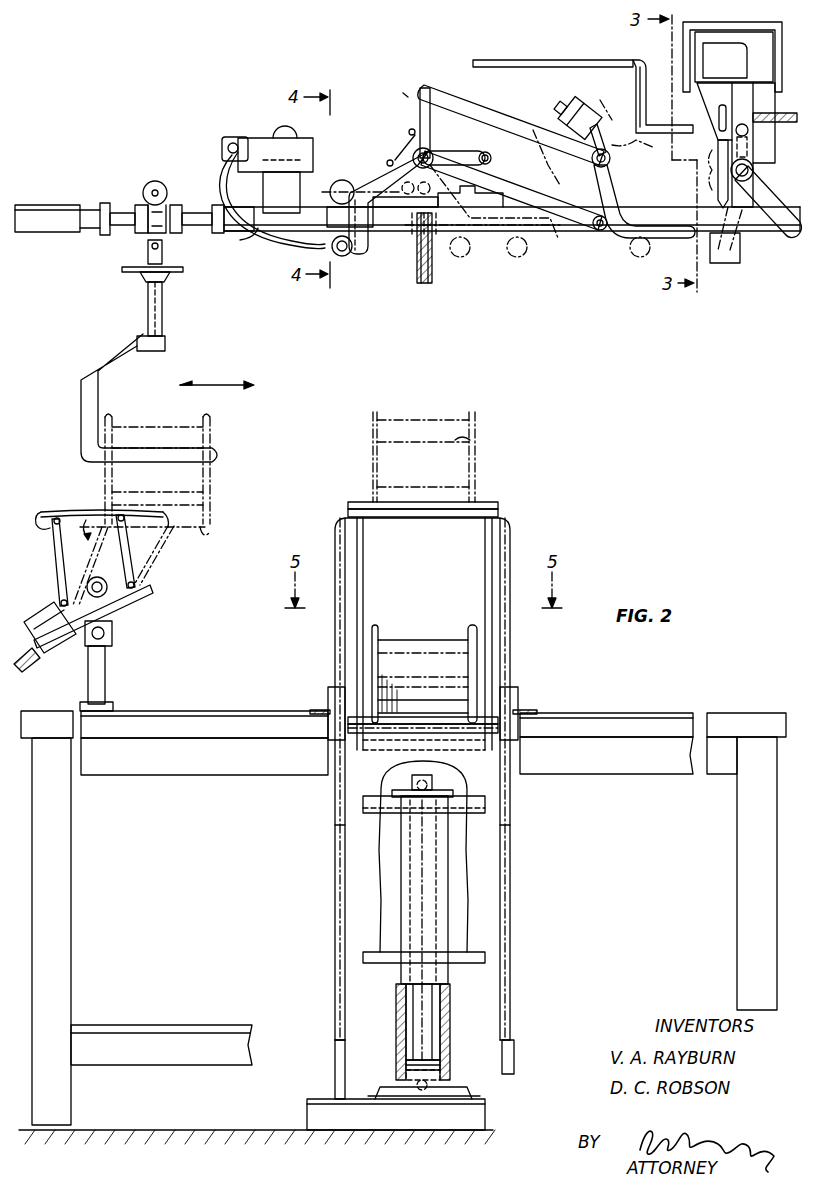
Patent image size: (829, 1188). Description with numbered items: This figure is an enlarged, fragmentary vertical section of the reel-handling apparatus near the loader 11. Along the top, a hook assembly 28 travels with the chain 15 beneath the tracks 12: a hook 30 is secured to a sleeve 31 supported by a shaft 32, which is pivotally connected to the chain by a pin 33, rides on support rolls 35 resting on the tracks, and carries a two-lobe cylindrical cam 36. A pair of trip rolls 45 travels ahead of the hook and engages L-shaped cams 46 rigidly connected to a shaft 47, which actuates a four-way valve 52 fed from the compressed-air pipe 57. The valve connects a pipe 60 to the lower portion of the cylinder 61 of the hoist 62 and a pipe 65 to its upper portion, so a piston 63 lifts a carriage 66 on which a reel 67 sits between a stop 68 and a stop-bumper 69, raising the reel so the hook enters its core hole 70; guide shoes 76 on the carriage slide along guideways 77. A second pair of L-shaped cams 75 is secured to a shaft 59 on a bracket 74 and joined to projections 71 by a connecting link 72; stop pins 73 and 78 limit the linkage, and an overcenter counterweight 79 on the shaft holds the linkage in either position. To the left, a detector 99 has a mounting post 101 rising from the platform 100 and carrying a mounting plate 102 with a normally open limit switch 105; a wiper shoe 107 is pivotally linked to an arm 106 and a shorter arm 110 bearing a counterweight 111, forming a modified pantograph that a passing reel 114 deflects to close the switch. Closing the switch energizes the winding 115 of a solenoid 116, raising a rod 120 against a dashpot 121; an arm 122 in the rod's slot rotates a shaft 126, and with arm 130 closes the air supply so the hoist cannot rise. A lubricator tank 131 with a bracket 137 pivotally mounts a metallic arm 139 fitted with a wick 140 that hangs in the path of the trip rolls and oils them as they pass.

The loader 11 is at (190, 200).
The tracks 12 is at (48, 205).
The chain 15 is at (105, 203).
The hook assembly 28 is at (116, 326).
The hook 30 is at (90, 368).
The sleeve 31 is at (146, 300).
The shaft 32 is at (160, 268).
The pin 33 is at (146, 252).
The support rolls 35 is at (158, 181).
The two-lobe cylindrical cam 36 is at (152, 351).
The trip rolls 45 is at (343, 257).
The L-shaped cams 46 is at (370, 182).
The shaft 47 is at (414, 152).
The four-way valve 52 is at (448, 186).
The pipe 57 is at (527, 58).
The shaft 59 is at (606, 150).
The pipe 60 is at (421, 284).
The cylinder 61 is at (402, 1058).
The hoist 62 is at (421, 764).
The piston 63 is at (413, 1012).
The pipe 65 is at (416, 270).
The carriage 66 is at (498, 516).
The reel 67 is at (472, 415).
The stop 68 is at (498, 506).
The stop-bumper 69 is at (350, 504).
The core hole 70 is at (465, 440).
The projections 71 is at (410, 98).
The connecting link 72 is at (490, 110).
The stop pins 73 is at (410, 130).
The bracket 74 is at (597, 232).
The L-shaped cams 75 is at (552, 160).
The guide shoes 76 is at (334, 552).
The guideways 77 is at (336, 868).
The stop pins 78 is at (387, 162).
The overcenter counterweight 79 is at (585, 100).
The detector 99 is at (55, 586).
The platform 100 is at (165, 712).
The mounting post 101 is at (88, 683).
The mounting plate 102 is at (132, 596).
The limit switch 105 is at (50, 618).
The arm 106 is at (60, 550).
The wiper shoe 107 is at (44, 518).
The arm 110 is at (152, 550).
The counterweight 111 is at (120, 606).
The reel 114 is at (190, 428).
The winding 115 is at (705, 43).
The solenoid 116 is at (748, 45).
The rod 120 is at (717, 150).
The dashpot 121 is at (733, 274).
The arm 122 is at (706, 188).
The shaft 126 is at (752, 168).
The arm 130 is at (752, 232).
The tank 131 is at (312, 140).
The bracket 137 is at (236, 137).
The metallic arm 139 is at (256, 240).
The wick 140 is at (222, 148).